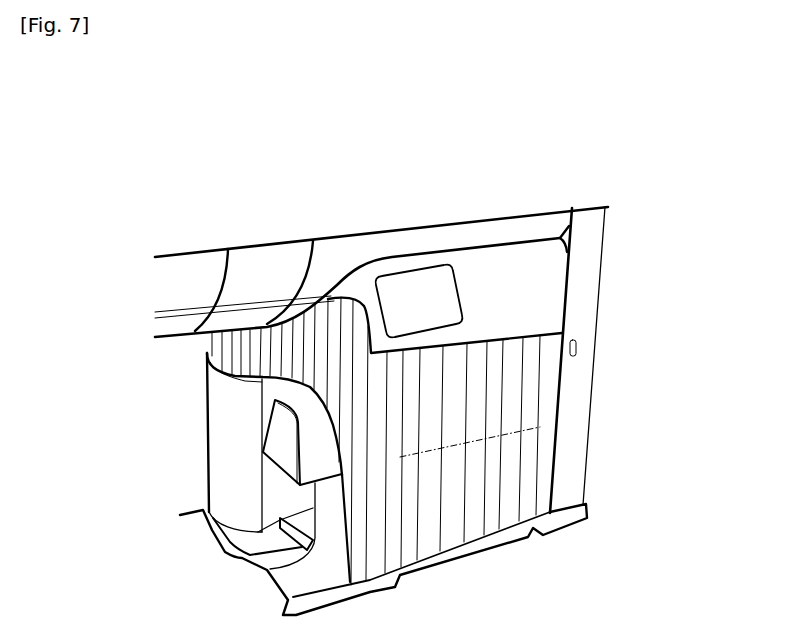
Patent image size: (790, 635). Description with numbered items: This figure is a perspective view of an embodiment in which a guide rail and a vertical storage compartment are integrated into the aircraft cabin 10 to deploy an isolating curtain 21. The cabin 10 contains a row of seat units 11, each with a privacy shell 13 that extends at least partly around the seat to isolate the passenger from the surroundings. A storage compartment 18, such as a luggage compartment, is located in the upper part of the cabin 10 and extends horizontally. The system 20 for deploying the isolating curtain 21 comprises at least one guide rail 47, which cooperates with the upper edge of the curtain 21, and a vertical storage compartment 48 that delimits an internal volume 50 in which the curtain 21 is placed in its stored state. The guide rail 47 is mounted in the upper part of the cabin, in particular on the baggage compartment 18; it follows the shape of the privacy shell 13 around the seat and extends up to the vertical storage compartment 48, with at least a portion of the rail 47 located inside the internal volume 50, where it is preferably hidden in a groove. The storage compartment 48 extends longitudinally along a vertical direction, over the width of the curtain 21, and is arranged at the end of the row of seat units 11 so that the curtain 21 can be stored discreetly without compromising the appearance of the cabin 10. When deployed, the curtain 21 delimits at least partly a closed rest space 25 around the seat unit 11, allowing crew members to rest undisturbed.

The aircraft cabin 10 is at (157, 190).
The seat unit 11 is at (219, 406).
The privacy shell 13 is at (223, 428).
The storage compartment 18 is at (317, 283).
The system for deploying the isolating curtain 20 is at (436, 240).
The isolating curtain 21 is at (527, 387).
The closed rest space 25 is at (482, 288).
The guide rail 47 is at (371, 249).
The vertical storage compartment 48 is at (590, 267).
The internal volume 50 is at (552, 427).